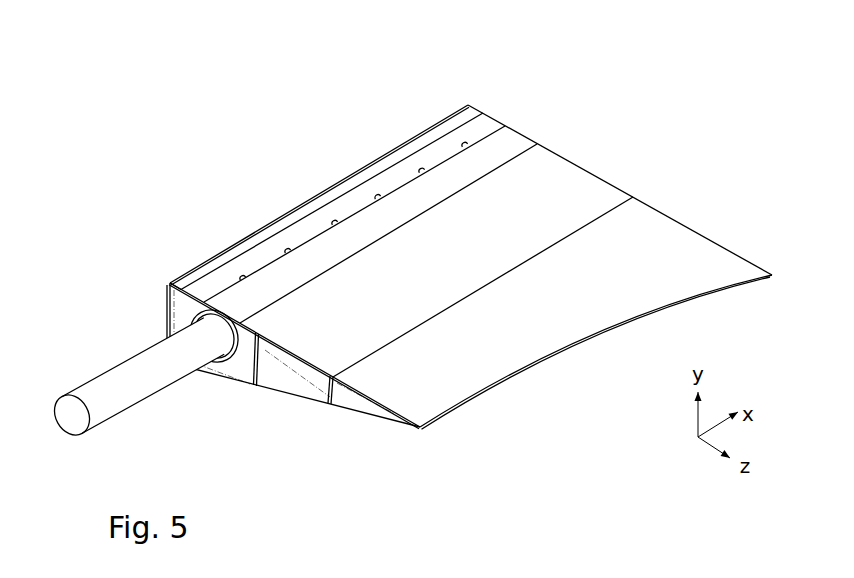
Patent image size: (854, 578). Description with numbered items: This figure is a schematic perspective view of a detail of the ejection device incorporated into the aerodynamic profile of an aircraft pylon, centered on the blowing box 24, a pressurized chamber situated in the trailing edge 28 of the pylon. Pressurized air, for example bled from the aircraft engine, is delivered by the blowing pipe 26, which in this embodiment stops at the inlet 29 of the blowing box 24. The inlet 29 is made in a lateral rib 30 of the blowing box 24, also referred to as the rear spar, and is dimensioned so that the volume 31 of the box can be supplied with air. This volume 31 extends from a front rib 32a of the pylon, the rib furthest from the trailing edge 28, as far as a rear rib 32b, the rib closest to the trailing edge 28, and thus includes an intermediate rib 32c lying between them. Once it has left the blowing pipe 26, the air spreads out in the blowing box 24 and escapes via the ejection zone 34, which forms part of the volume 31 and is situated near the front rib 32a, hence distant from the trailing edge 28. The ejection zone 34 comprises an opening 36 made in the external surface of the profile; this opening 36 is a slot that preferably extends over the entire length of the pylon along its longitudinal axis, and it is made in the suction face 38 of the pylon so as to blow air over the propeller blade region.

The blowing box 24 is at (410, 273).
The blowing pipe 26 is at (102, 385).
The trailing edge 28 is at (527, 333).
The inlet 29 is at (227, 368).
The lateral rib 30 is at (297, 385).
The volume 31 is at (548, 185).
The front rib 32a is at (165, 313).
The rear rib 32b is at (330, 404).
The intermediate rib 32c is at (258, 386).
The ejection zone 34 is at (472, 152).
The opening 36 is at (441, 152).
The suction face 38 is at (388, 200).